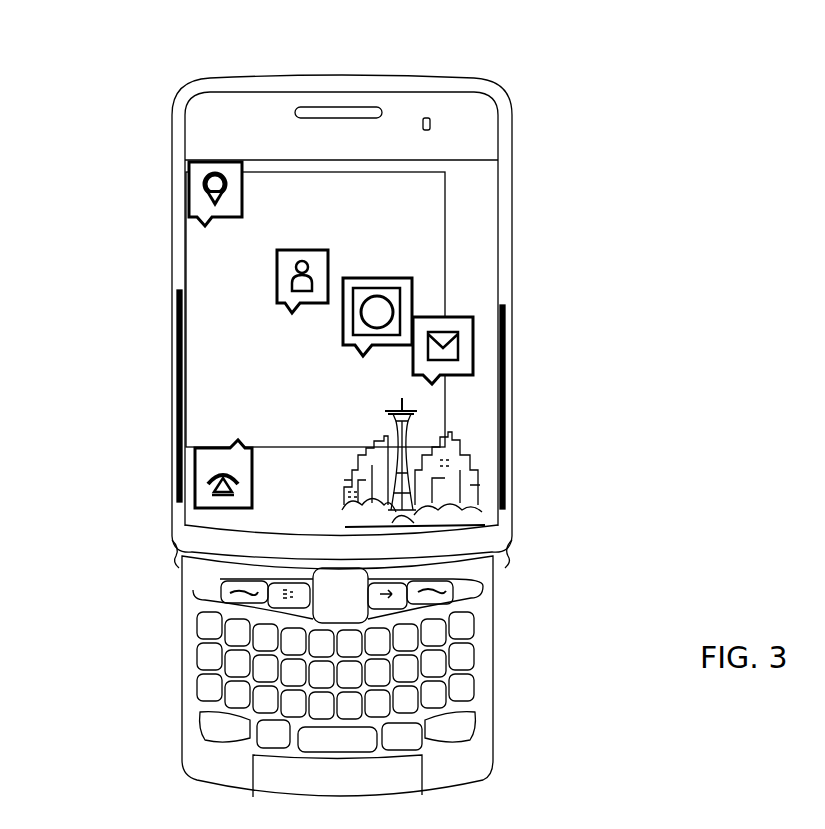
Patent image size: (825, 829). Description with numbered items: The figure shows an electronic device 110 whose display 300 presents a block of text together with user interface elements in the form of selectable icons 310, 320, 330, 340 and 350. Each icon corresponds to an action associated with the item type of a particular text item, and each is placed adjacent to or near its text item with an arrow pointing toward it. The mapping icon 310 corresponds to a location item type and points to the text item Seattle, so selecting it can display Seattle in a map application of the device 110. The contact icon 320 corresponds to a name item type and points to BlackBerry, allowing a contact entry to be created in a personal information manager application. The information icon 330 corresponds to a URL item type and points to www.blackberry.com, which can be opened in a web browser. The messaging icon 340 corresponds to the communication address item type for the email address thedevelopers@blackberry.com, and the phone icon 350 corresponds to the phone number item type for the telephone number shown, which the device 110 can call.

The device 110 is at (338, 76).
The display 300 is at (162, 168).
The mapping icon 310 is at (211, 161).
The contact icon 320 is at (317, 250).
The information icon 330 is at (381, 279).
The messaging icon 340 is at (440, 317).
The phone icon 350 is at (254, 490).